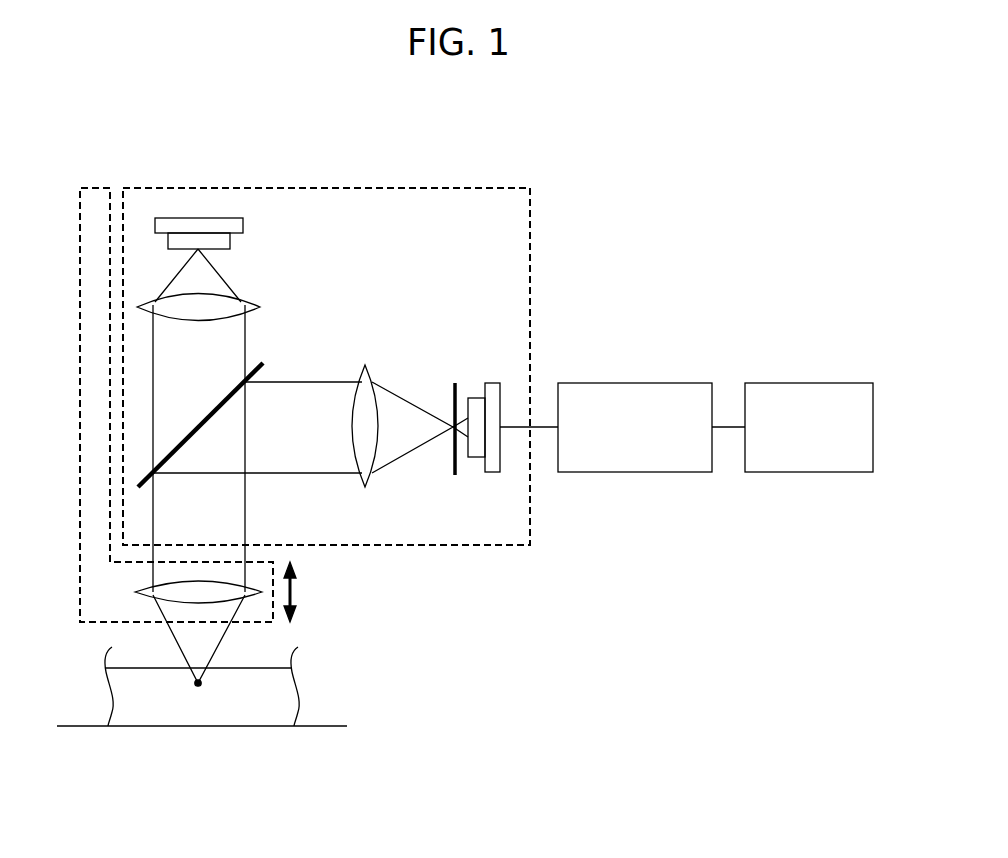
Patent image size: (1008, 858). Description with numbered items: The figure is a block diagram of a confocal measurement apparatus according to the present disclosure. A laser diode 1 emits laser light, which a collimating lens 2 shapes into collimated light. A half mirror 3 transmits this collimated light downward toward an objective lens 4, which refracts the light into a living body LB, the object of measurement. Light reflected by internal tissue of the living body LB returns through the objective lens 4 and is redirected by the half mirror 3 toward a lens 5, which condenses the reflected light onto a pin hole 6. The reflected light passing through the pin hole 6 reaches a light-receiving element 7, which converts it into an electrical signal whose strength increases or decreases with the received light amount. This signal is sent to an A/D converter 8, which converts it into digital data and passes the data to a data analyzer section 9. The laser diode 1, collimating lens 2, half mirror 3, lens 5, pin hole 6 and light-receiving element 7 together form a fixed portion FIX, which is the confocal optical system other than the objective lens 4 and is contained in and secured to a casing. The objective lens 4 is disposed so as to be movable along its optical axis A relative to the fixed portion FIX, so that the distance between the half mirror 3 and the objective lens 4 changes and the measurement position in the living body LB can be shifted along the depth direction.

The laser diode 1 is at (243, 226).
The collimating lens 2 is at (258, 307).
The half mirror 3 is at (263, 363).
The objective lens 4 is at (143, 591).
The lens 5 is at (368, 366).
The pin hole 6 is at (455, 383).
The light-receiving element 7 is at (491, 383).
The A/D converter 8 is at (656, 383).
The data analyzer section 9 is at (822, 383).
The optical axis A is at (296, 592).
The living body LB is at (297, 694).
The fixed portion FIX is at (525, 178).